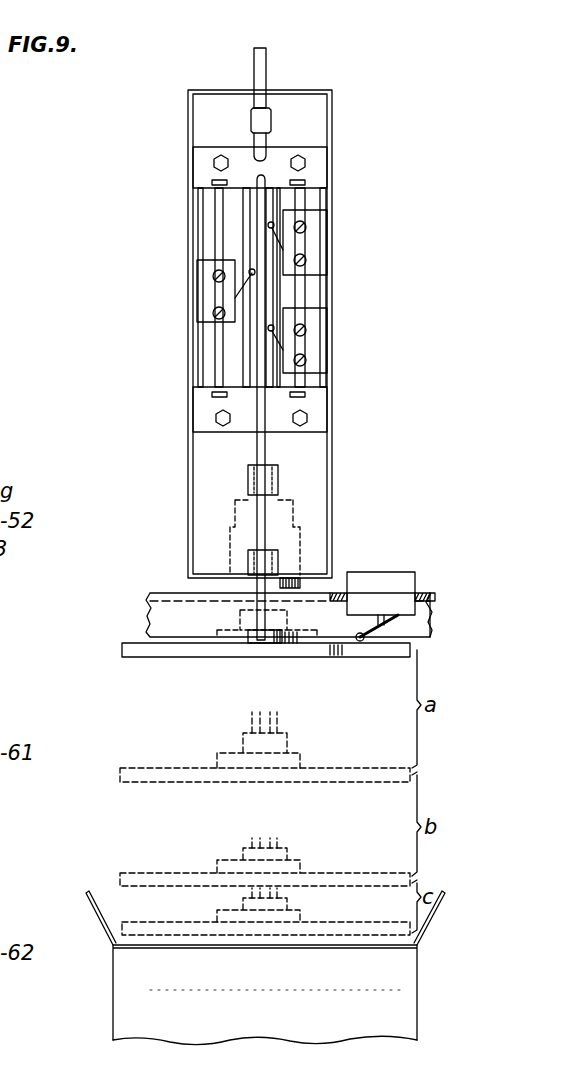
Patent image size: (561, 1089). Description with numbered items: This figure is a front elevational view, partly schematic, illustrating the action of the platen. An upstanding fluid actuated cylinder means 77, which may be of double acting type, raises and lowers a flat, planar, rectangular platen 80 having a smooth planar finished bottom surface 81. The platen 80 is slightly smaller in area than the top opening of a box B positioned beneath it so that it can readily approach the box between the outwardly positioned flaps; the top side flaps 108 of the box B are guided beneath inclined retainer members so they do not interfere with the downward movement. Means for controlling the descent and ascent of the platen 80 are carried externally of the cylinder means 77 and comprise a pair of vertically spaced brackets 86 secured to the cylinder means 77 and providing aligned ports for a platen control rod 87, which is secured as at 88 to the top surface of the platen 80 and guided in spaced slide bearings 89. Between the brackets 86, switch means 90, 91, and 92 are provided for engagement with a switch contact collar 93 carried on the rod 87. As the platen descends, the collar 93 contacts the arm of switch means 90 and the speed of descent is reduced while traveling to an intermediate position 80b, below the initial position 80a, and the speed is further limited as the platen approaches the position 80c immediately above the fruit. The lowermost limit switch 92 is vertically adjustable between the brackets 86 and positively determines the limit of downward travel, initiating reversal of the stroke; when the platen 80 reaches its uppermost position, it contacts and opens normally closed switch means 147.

The fluid actuated cylinder means 77 is at (334, 135).
The platen control rod 87 is at (268, 75).
The switch contact collar 93 is at (257, 118).
The brackets 86 is at (313, 178).
The switch means 91 is at (205, 297).
The switch means 90 is at (313, 250).
The limit switch 92 is at (313, 350).
The slide bearings 89 is at (262, 480).
The platen 80 is at (133, 645).
The bottom surface 81 is at (210, 660).
The rod securement 88 is at (265, 643).
The switch means 147 is at (375, 595).
The platen position 80a is at (152, 768).
The intermediate position 80b is at (160, 873).
The platen position 80c is at (172, 908).
The top side flaps 108 is at (100, 936).
The box B is at (125, 1018).